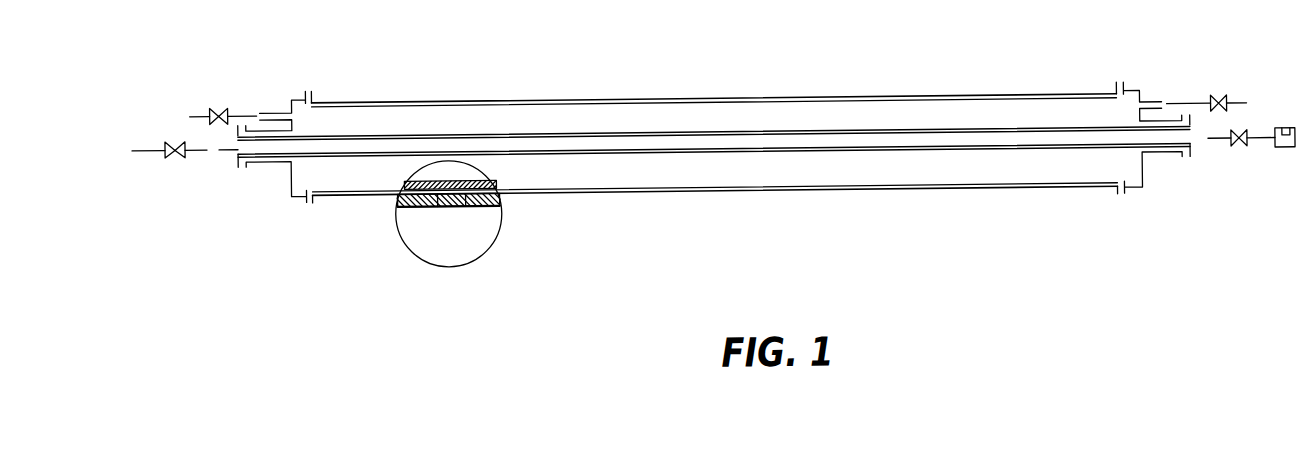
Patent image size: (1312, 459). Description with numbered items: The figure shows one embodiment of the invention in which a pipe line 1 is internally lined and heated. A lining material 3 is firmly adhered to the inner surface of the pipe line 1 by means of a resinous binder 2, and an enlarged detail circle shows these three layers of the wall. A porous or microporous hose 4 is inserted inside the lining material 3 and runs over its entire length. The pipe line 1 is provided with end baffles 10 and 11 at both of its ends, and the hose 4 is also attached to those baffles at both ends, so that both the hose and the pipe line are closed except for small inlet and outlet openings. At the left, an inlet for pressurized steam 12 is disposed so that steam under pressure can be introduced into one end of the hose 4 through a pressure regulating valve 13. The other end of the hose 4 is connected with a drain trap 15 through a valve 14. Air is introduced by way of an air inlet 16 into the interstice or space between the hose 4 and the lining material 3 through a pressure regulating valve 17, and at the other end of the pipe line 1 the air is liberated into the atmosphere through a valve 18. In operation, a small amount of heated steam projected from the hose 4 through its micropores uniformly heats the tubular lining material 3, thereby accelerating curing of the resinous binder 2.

The pipe line 1 is at (660, 98).
The resinous binder 2 is at (705, 98).
The lining material 3 is at (787, 102).
The porous hose 4 is at (898, 130).
The end baffle 10 is at (291, 180).
The end baffle 11 is at (1142, 178).
The inlet for pressurized steam 12 is at (147, 144).
The pressure regulating valve 13 is at (177, 154).
The valve 14 is at (1242, 153).
The drain trap 15 is at (1284, 154).
The air inlet 16 is at (198, 109).
The pressure regulating valve 17 is at (218, 104).
The valve 18 is at (1222, 102).